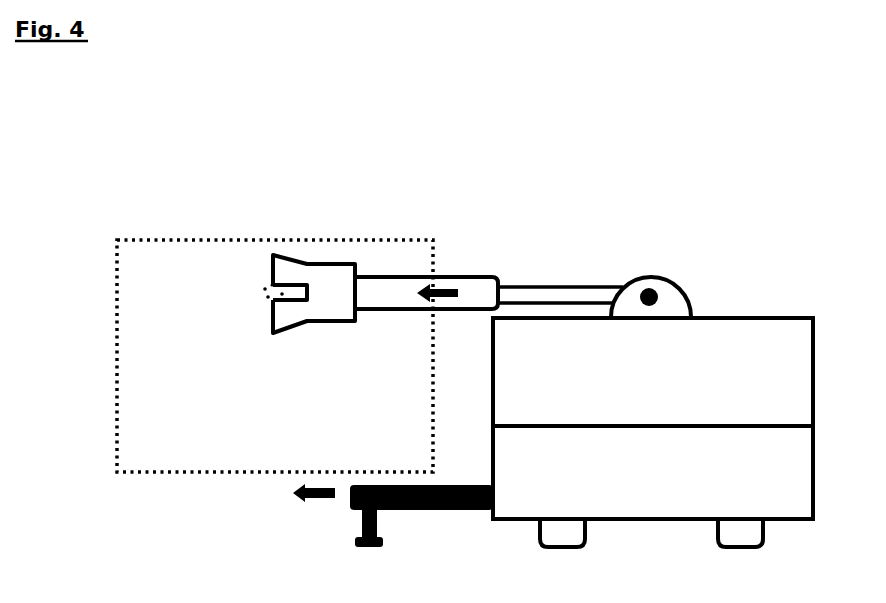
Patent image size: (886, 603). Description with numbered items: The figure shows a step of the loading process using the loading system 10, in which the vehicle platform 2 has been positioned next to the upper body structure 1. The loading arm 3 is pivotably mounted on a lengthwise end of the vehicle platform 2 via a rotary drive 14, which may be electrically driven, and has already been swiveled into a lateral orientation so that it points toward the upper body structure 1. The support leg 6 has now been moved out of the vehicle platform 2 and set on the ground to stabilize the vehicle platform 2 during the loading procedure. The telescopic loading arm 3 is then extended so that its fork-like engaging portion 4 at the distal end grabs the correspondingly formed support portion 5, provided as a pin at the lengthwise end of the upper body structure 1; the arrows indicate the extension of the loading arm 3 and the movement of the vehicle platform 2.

The loading system 10 is at (127, 166).
The upper body structure 1 is at (332, 235).
The engaging portion 4 is at (275, 252).
The support portion 5 is at (266, 291).
The loading arm 3 is at (483, 274).
The rotary drive 14 is at (652, 289).
The vehicle platform 2 is at (793, 314).
The support leg 6 is at (443, 510).